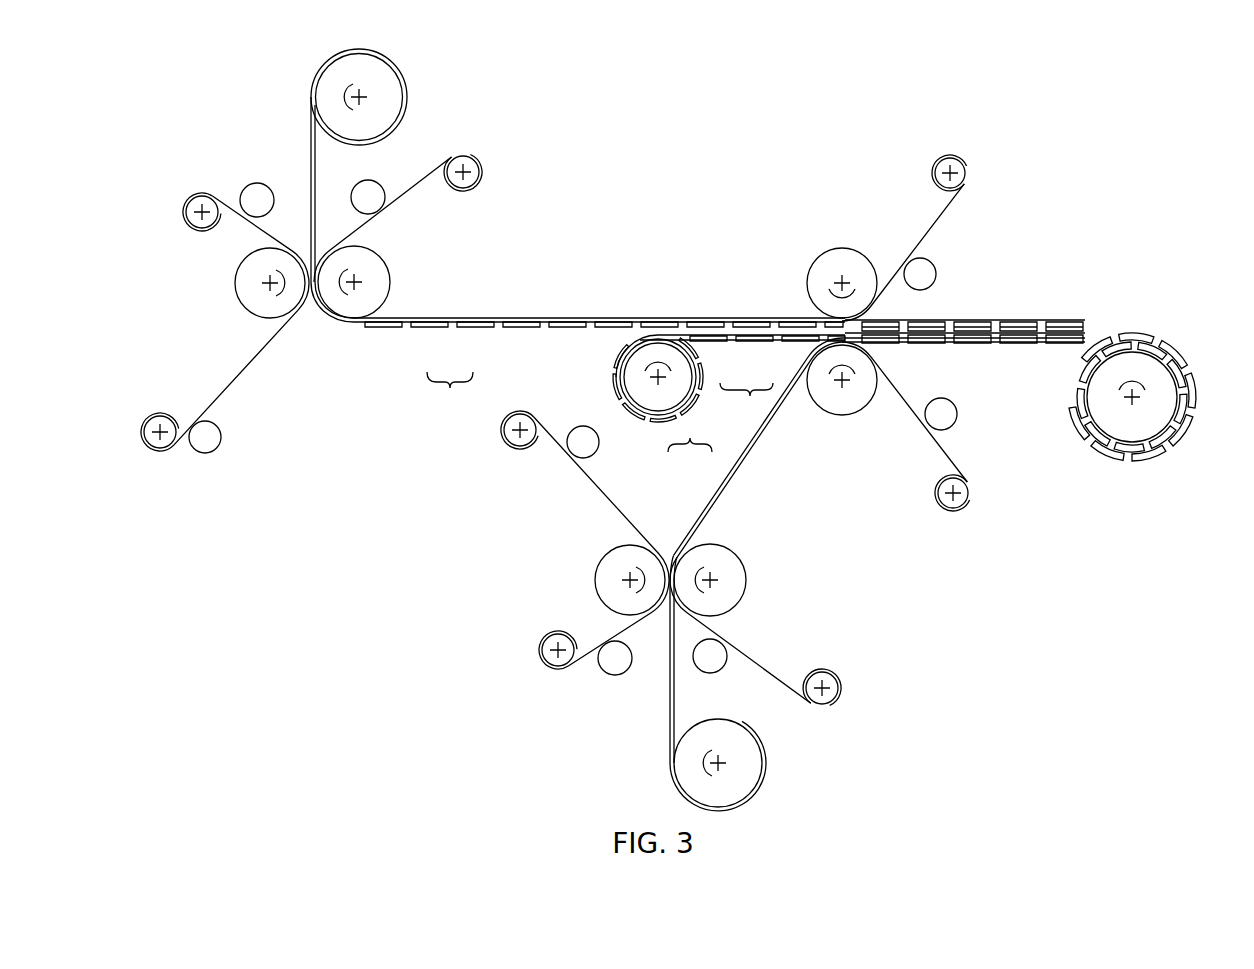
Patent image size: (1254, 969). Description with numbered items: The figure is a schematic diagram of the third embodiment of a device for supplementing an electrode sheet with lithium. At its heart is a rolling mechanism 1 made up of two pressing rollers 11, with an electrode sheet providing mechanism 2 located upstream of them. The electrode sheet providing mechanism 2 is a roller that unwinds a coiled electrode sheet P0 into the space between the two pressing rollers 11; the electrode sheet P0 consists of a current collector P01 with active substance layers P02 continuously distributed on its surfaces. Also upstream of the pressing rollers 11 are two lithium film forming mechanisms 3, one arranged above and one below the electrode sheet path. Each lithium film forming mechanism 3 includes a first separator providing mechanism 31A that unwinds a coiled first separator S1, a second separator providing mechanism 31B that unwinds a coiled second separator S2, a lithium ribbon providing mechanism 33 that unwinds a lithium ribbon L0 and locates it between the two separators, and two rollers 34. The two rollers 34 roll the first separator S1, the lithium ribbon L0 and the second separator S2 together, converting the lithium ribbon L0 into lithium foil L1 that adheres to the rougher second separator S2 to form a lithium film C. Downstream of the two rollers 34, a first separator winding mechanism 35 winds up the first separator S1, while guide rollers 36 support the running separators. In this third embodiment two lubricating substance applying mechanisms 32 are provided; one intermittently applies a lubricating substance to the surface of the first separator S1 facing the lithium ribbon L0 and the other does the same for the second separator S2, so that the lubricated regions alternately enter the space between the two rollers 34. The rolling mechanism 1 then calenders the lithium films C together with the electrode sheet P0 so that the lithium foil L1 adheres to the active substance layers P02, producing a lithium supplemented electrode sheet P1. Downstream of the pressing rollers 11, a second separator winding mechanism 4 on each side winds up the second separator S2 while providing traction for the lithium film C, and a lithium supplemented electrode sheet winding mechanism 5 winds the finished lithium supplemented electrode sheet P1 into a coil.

The rolling mechanism 1 is at (798, 230).
The electrode sheet providing mechanism 2 is at (658, 380).
The lithium film forming mechanism 3 is at (108, 183).
The second separator winding mechanism 4 is at (938, 165).
The lithium supplemented electrode sheet winding mechanism 5 is at (1132, 397).
The pressing rollers 11 is at (840, 252).
The first separator providing mechanism 31A is at (197, 232).
The second separator providing mechanism 31B is at (480, 180).
The lubricating substance applying mechanism 32 is at (258, 184).
The lithium ribbon providing mechanism 33 is at (392, 92).
The rollers 34 is at (238, 276).
The first separator winding mechanism 35 is at (152, 446).
The guide roller 36 is at (208, 455).
The lithium ribbon L0 is at (311, 172).
The lithium foil L1 is at (300, 316).
The first separator S1 is at (258, 236).
The second separator S2 is at (406, 190).
The lithium film C is at (569, 412).
The electrode sheet P0 is at (730, 376).
The current collector P01 is at (742, 336).
The active substance layers P02 is at (756, 336).
The lithium supplemented electrode sheet P1 is at (1182, 345).